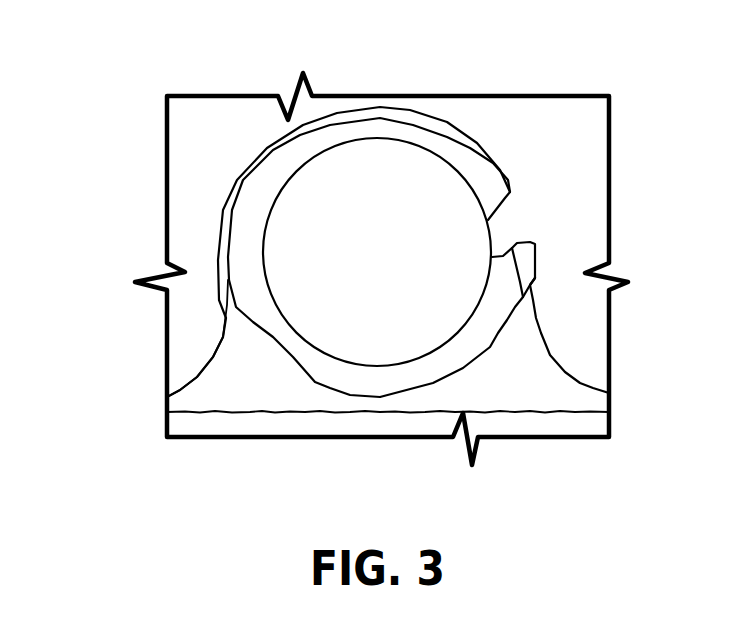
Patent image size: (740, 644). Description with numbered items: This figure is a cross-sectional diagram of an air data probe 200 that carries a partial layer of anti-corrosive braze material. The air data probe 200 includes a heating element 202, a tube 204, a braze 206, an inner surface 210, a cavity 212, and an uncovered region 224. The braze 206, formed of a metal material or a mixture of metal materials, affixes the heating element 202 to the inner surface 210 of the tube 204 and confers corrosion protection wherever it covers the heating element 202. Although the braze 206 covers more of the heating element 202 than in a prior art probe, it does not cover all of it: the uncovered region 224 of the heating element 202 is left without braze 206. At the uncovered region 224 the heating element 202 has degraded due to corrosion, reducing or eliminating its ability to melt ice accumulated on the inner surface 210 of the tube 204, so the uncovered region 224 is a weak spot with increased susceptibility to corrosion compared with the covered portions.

The air data probe 200 is at (110, 147).
The heating element 202 is at (360, 387).
The tube 204 is at (315, 423).
The braze 206 is at (217, 402).
The inner surface 210 is at (535, 412).
The cavity 212 is at (578, 147).
The uncovered region 224 is at (523, 297).